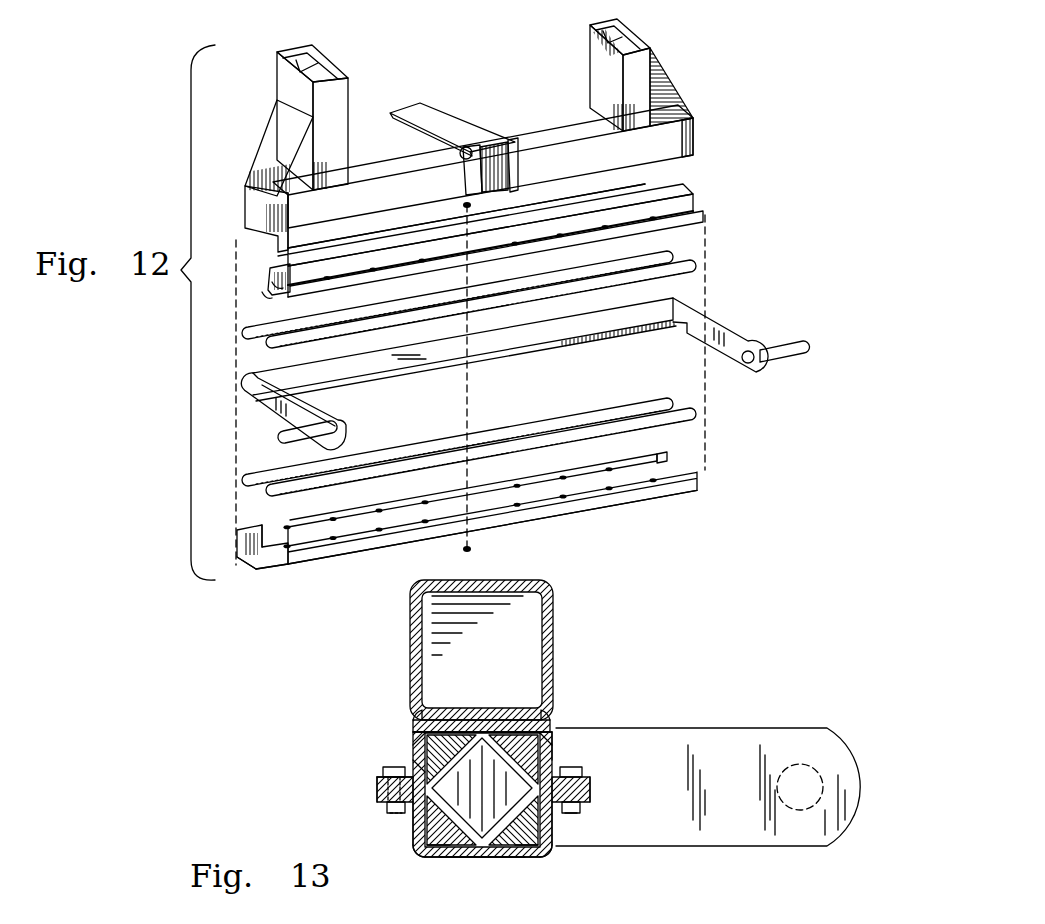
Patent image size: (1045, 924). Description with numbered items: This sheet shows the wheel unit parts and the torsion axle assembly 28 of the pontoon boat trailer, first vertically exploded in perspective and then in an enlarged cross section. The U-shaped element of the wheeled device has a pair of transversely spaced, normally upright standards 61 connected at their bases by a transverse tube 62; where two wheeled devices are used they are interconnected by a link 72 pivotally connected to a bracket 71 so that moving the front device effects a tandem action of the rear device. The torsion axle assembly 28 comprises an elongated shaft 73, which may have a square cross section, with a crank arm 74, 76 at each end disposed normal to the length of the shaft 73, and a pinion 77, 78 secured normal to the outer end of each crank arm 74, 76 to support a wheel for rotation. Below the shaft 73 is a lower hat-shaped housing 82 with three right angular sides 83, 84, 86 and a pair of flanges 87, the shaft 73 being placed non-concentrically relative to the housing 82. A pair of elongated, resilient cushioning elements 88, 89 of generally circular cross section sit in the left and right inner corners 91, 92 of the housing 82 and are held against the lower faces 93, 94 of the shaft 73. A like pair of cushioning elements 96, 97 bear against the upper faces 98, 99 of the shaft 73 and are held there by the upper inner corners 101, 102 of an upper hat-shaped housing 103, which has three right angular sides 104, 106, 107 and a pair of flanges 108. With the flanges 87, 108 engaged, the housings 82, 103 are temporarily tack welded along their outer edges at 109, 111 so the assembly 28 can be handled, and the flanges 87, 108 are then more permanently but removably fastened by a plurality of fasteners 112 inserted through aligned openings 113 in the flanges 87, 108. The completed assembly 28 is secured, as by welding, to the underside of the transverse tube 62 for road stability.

In FIG. 13, the torsion axle assembly 28 is at (353, 705).
In FIG. 12, the standard 61 is at (338, 105).
In FIG. 12, the transverse tube 62 is at (558, 132).
In FIG. 13, the transverse tube 62 is at (552, 650).
In FIG. 12, the bracket 71 is at (512, 160).
In FIG. 12, the link 72 is at (432, 102).
In FIG. 12, the shaft 73 is at (384, 378).
In FIG. 13, the shaft 73 is at (482, 788).
In FIG. 12, the crank arm 74 is at (258, 396).
In FIG. 12, the crank arm 76 is at (734, 328).
In FIG. 13, the crank arm 76 is at (701, 745).
In FIG. 12, the pinion 77 is at (282, 437).
In FIG. 12, the pinion 78 is at (790, 360).
In FIG. 13, the pinion 78 is at (797, 768).
In FIG. 12, the lower hat-shaped housing 82 is at (262, 578).
In FIG. 13, the lower hat-shaped housing 82 is at (574, 863).
In FIG. 12, the side 83 is at (324, 556).
In FIG. 13, the side 83 is at (418, 820).
In FIG. 12, the side 84 is at (271, 573).
In FIG. 13, the side 84 is at (481, 860).
In FIG. 12, the side 86 is at (243, 551).
In FIG. 13, the side 86 is at (553, 820).
In FIG. 12, the flange 87 is at (239, 546).
In FIG. 13, the flange 87 is at (377, 798).
In FIG. 12, the cushioning element 88 is at (533, 432).
In FIG. 13, the cushioning element 88 is at (433, 838).
In FIG. 12, the cushioning element 89 is at (610, 430).
In FIG. 13, the cushioning element 89 is at (540, 835).
In FIG. 12, the inner corner 91 is at (264, 534).
In FIG. 13, the inner corner 91 is at (422, 850).
In FIG. 12, the inner corner 92 is at (278, 547).
In FIG. 13, the inner corner 92 is at (540, 850).
In FIG. 13, the lower face 93 is at (441, 848).
In FIG. 13, the lower face 94 is at (529, 847).
In FIG. 12, the cushioning element 96 is at (244, 334).
In FIG. 13, the cushioning element 96 is at (440, 752).
In FIG. 12, the cushioning element 97 is at (266, 350).
In FIG. 13, the cushioning element 97 is at (545, 757).
In FIG. 13, the upper face 98 is at (424, 729).
In FIG. 13, the upper face 99 is at (553, 731).
In FIG. 12, the upper inner corner 101 is at (248, 296).
In FIG. 13, the upper inner corner 101 is at (417, 720).
In FIG. 12, the upper inner corner 102 is at (272, 292).
In FIG. 13, the upper inner corner 102 is at (548, 714).
In FIG. 12, the upper hat-shaped housing 103 is at (230, 224).
In FIG. 13, the upper hat-shaped housing 103 is at (491, 703).
In FIG. 12, the side 104 is at (242, 268).
In FIG. 13, the side 104 is at (414, 762).
In FIG. 12, the side 106 is at (370, 243).
In FIG. 13, the side 106 is at (449, 722).
In FIG. 12, the side 107 is at (413, 252).
In FIG. 13, the side 107 is at (553, 758).
In FIG. 12, the flange 108 is at (243, 284).
In FIG. 13, the flange 108 is at (380, 777).
In FIG. 13, the tack weld 109 is at (377, 790).
In FIG. 13, the tack weld 111 is at (590, 787).
In FIG. 13, the fastener 112 is at (377, 767).
In FIG. 12, the opening 113 is at (652, 220).